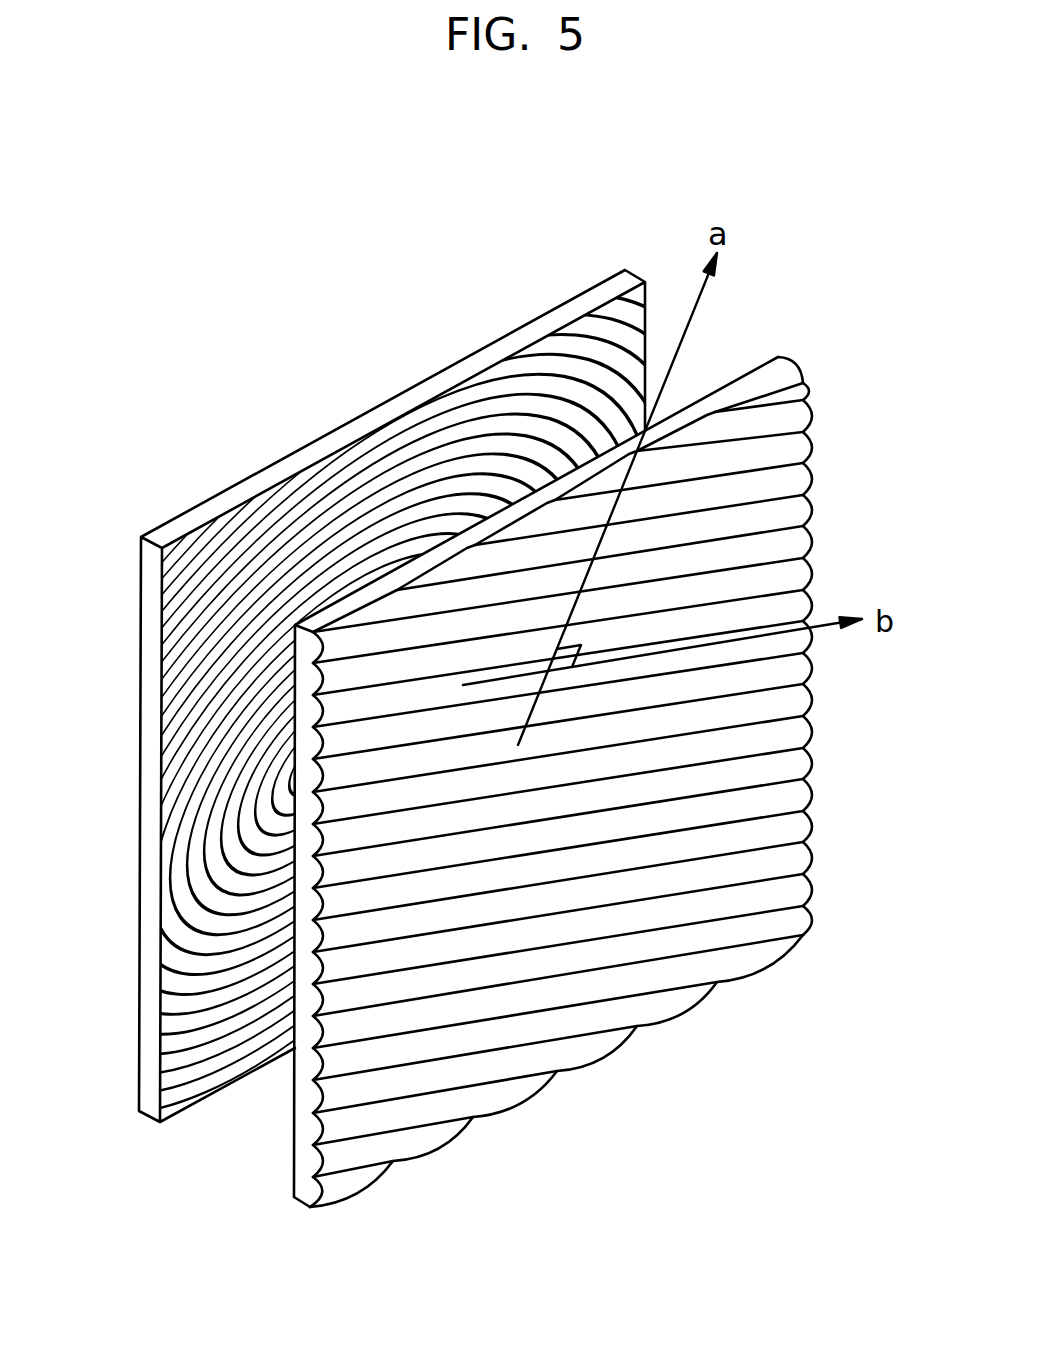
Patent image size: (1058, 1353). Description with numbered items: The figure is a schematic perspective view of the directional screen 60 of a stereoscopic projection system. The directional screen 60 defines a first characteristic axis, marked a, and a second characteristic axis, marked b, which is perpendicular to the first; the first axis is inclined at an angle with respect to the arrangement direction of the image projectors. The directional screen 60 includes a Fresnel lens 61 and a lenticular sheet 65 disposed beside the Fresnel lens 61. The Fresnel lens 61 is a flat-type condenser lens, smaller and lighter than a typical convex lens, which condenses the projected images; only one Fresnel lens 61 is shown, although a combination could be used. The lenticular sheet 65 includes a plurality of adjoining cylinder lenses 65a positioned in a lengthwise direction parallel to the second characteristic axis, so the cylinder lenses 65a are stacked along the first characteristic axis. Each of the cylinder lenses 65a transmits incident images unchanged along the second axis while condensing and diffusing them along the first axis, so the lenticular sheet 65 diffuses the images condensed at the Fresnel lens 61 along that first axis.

The directional screen 60 is at (778, 276).
The Fresnel lens 61 is at (138, 1113).
The lenticular sheet 65 is at (294, 1196).
The cylinder lenses 65a is at (788, 513).